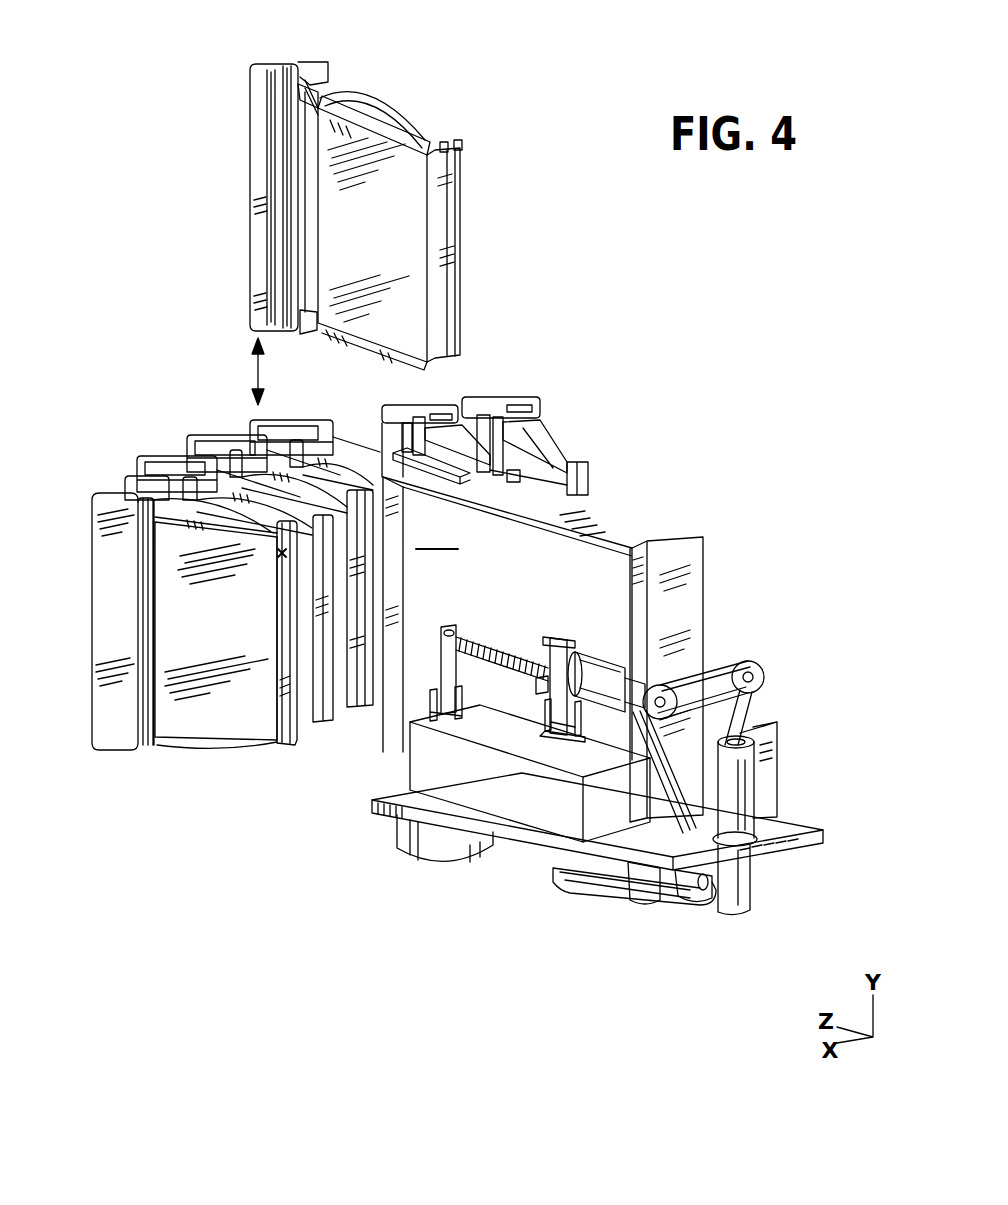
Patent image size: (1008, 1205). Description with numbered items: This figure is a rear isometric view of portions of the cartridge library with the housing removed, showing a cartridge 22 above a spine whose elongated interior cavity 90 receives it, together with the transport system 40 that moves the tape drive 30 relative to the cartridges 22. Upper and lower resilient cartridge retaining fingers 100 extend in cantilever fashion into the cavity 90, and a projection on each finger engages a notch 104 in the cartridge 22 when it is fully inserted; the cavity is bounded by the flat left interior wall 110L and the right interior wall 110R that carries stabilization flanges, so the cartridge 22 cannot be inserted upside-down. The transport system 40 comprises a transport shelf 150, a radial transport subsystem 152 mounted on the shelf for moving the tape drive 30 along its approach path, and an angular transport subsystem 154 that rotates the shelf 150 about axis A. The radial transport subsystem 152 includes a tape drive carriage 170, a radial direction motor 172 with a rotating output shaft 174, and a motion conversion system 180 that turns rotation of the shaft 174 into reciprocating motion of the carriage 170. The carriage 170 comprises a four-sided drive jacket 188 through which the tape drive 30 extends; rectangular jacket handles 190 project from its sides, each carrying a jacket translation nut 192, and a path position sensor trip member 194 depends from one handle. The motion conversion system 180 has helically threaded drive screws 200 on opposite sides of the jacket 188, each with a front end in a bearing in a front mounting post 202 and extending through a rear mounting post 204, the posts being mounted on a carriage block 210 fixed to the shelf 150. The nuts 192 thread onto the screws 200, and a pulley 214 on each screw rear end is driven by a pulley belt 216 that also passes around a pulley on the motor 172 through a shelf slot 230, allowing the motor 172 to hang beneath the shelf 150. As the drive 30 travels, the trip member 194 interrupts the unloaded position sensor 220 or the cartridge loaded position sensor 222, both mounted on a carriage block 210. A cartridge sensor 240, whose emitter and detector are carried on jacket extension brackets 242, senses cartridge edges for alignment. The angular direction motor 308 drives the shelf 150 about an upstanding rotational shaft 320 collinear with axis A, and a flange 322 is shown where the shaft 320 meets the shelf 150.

The cartridge 22 is at (447, 197).
The tape drive 30 is at (700, 540).
The transport system 40 is at (818, 625).
The interior cavity 90 is at (305, 181).
The cartridge retaining finger 100 is at (312, 95).
The notch 104 is at (368, 100).
The left interior wall 110L is at (331, 80).
The right interior wall 110R is at (288, 143).
The transport shelf 150 is at (783, 823).
The radial transport subsystem 152 is at (797, 556).
The angular transport subsystem 154 is at (385, 860).
The tape drive carriage 170 is at (612, 532).
The radial direction motor 172 is at (587, 888).
The rotating output shaft 174 is at (701, 892).
The motion conversion system 180 is at (793, 660).
The drive jacket 188 is at (507, 618).
The jacket handle 190 is at (594, 652).
The jacket translation nut 192 is at (538, 686).
The path position sensor trip member 194 is at (553, 712).
The drive screw 200 is at (510, 650).
The front mounting post 202 is at (452, 627).
The rear mounting post 204 is at (637, 757).
The carriage block 210 is at (765, 768).
The pulley 214 is at (757, 664).
The pulley belt 216 is at (753, 710).
The unloaded position sensor 220 is at (551, 767).
The cartridge loaded position sensor 222 is at (412, 700).
The shelf slot 230 is at (632, 884).
The cartridge sensor 240 is at (398, 458).
The jacket extension bracket 242 is at (463, 473).
The angular direction motor 308 is at (435, 850).
The upstanding rotational shaft 320 is at (747, 890).
The flange 322 is at (793, 843).